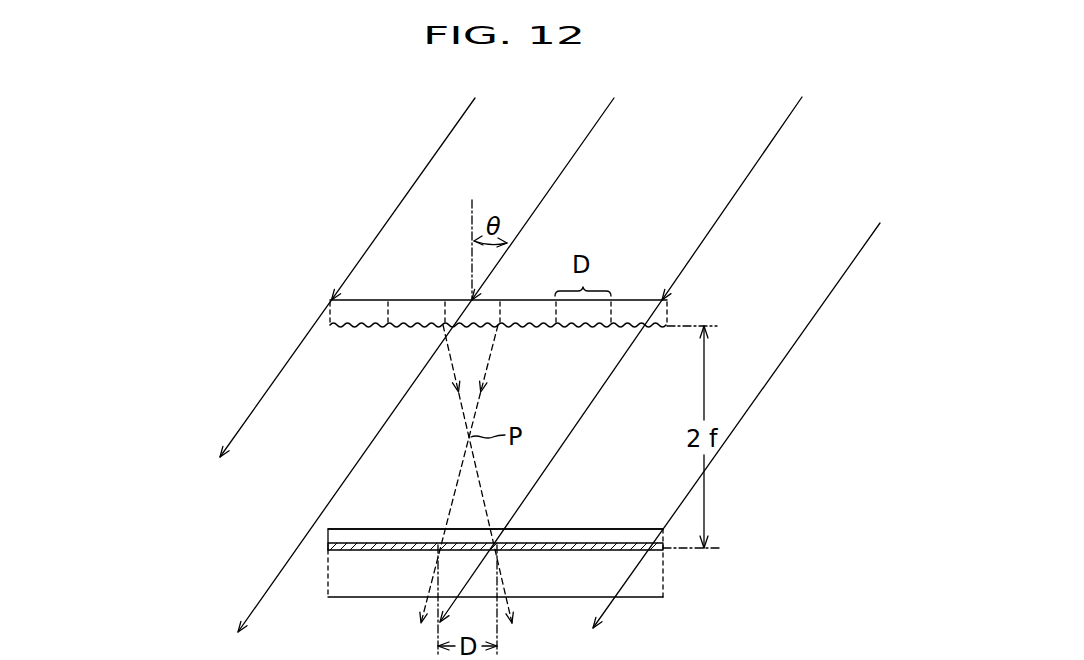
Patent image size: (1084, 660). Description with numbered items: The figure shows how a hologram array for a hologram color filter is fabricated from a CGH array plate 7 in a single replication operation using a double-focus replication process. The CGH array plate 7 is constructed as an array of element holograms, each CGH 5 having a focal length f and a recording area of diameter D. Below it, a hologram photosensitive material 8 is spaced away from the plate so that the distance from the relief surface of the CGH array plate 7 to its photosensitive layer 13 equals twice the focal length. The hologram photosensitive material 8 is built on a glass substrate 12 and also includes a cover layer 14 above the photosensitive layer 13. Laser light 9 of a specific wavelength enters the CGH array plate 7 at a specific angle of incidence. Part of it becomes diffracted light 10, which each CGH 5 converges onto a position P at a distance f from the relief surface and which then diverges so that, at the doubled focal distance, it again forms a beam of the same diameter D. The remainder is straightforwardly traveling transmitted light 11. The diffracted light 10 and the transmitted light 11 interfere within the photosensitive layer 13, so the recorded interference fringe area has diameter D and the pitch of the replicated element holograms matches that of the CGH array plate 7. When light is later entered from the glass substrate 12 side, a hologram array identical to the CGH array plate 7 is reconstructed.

The CGH 5 is at (490, 310).
The CGH array plate 7 is at (667, 310).
The hologram photosensitive material 8 is at (568, 564).
The laser light 9 is at (737, 172).
The diffracted light 10 is at (463, 495).
The transmitted light 11 is at (292, 372).
The glass substrate 12 is at (648, 592).
The photosensitive layer 13 is at (657, 552).
The cover layer 14 is at (623, 535).